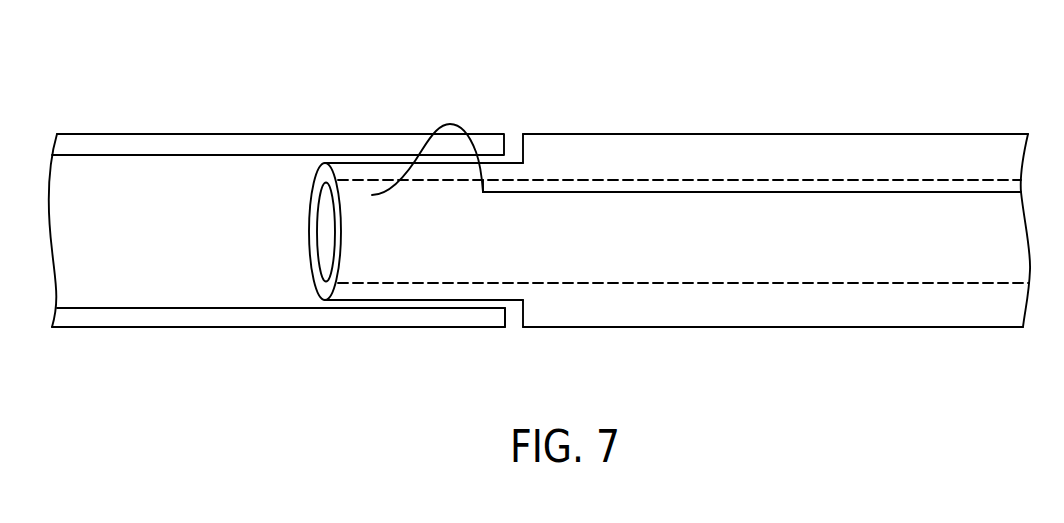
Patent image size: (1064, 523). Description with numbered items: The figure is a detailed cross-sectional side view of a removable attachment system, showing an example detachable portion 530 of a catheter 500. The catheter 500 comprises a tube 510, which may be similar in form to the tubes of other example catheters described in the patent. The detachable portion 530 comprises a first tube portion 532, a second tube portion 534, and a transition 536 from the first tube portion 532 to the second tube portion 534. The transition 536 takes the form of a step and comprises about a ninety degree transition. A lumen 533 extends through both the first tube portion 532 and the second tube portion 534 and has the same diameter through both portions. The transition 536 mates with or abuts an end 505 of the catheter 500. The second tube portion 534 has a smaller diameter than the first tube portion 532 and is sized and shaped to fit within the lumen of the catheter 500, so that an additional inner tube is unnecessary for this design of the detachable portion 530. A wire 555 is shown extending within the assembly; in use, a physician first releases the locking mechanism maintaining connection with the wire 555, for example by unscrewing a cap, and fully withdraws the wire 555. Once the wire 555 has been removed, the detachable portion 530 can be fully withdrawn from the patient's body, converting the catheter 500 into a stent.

The catheter 500 is at (166, 86).
The end of catheter 505 is at (505, 327).
The tube 510 is at (340, 133).
The detachable portion 530 is at (630, 133).
The first tube portion 532 is at (782, 148).
The lumen 533 is at (640, 249).
The second tube portion 534 is at (438, 293).
The transition 536 is at (523, 135).
The wire 555 is at (978, 192).